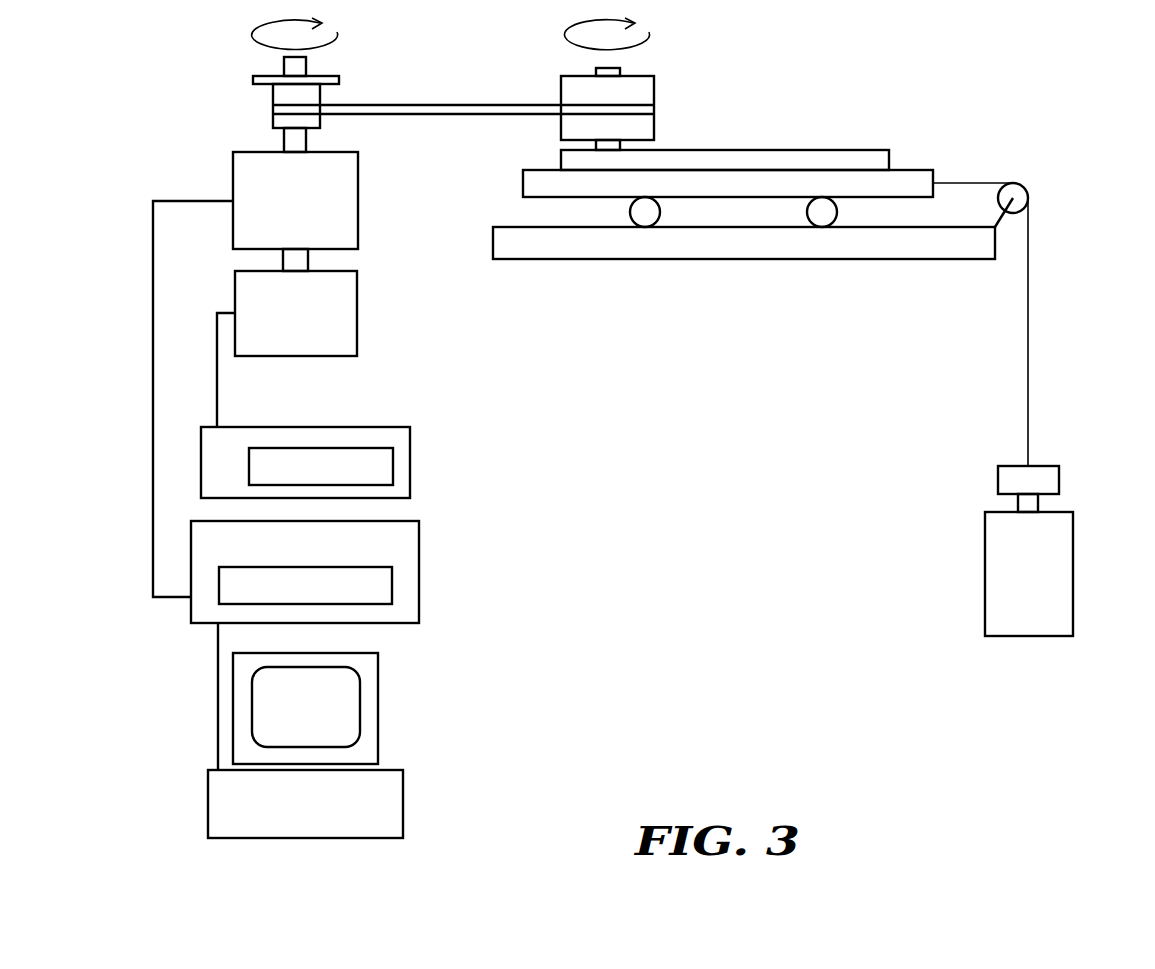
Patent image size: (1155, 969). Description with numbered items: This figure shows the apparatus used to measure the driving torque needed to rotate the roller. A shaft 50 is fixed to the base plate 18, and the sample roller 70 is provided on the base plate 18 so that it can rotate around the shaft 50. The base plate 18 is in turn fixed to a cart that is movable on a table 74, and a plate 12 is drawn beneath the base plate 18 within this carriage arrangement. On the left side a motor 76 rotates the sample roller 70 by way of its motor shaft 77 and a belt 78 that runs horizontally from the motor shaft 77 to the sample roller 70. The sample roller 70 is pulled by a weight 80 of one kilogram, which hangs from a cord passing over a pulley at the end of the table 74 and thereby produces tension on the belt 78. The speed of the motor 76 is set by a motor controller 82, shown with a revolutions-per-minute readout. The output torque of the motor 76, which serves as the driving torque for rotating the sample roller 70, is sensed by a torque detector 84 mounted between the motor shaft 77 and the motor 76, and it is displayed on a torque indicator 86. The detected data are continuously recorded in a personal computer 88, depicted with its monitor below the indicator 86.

The base plate 12 is at (915, 175).
The base plate 18 is at (850, 155).
The shaft 50 is at (620, 72).
The sample roller 70 is at (565, 87).
The table 74 is at (762, 250).
The motor 76 is at (348, 310).
The motor shaft 77 is at (290, 137).
The belt 78 is at (455, 117).
The weight 80 is at (1065, 567).
The motor controller 82 is at (405, 462).
The torque detector 84 is at (350, 201).
The torque indicator 86 is at (410, 574).
The personal computer 88 is at (387, 803).